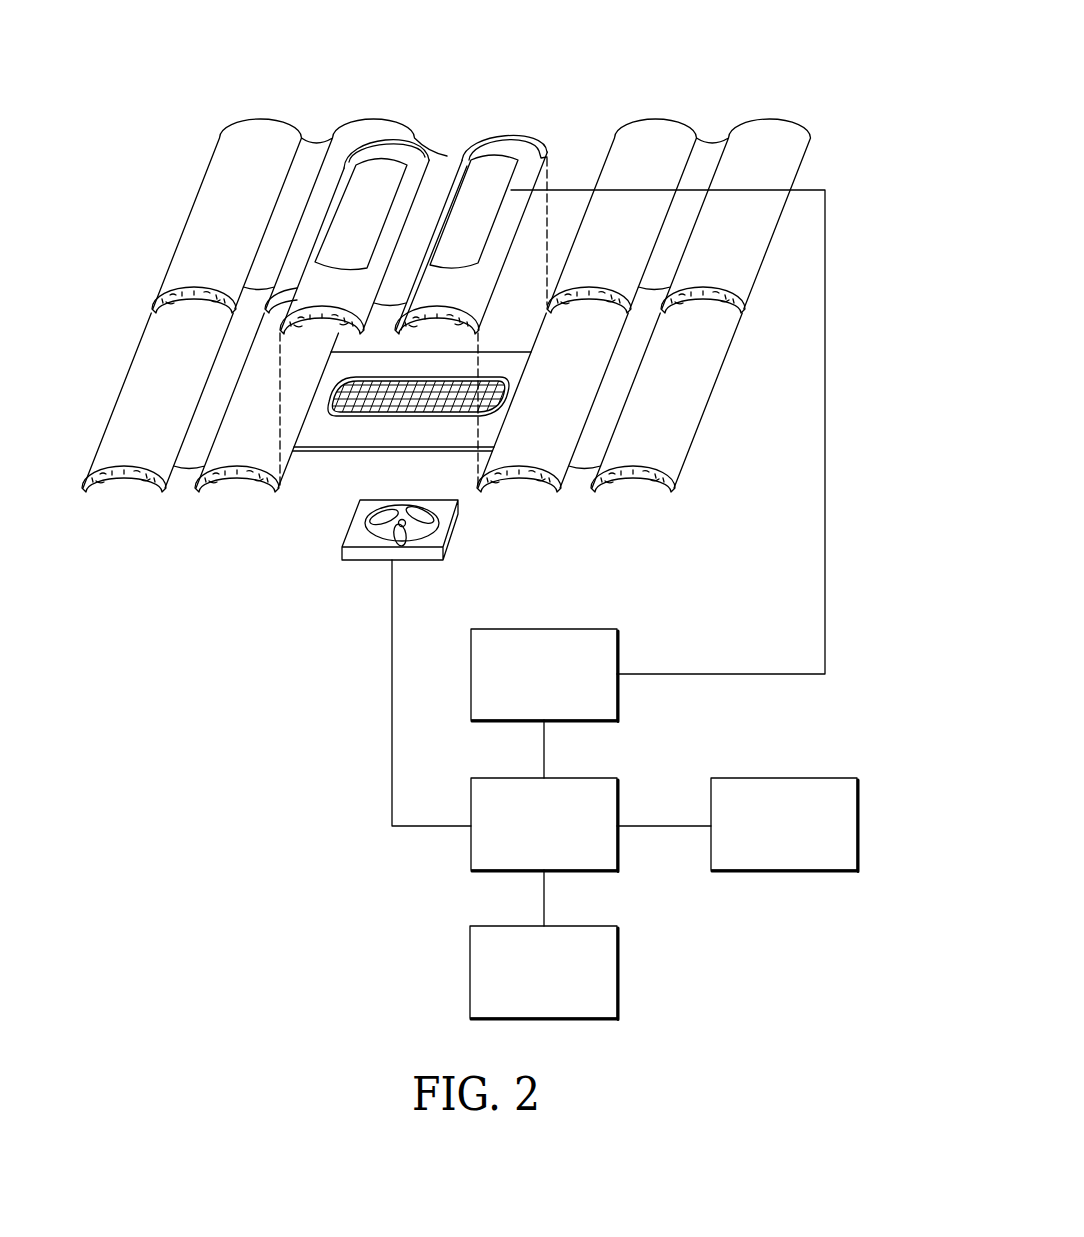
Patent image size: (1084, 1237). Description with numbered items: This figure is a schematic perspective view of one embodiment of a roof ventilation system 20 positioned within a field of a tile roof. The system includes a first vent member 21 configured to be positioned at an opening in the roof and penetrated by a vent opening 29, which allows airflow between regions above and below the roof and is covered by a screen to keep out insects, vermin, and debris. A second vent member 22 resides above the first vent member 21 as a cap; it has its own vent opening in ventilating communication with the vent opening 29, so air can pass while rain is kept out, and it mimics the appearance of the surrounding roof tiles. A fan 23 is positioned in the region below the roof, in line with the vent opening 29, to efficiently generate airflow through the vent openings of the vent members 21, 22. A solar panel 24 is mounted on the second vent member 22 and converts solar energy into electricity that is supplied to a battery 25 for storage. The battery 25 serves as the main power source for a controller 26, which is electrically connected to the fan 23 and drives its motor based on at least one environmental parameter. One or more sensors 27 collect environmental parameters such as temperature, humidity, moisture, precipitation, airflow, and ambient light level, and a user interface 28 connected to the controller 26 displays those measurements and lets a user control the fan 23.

The roof ventilation system 20 is at (677, 73).
The first vent member 21 is at (328, 426).
The second vent member 22 is at (526, 149).
The fan 23 is at (350, 555).
The solar panel 24 is at (490, 172).
The battery 25 is at (578, 629).
The controller 26 is at (578, 779).
The sensors 27 is at (818, 779).
The user interface 28 is at (578, 927).
The vent opening 29 is at (388, 403).